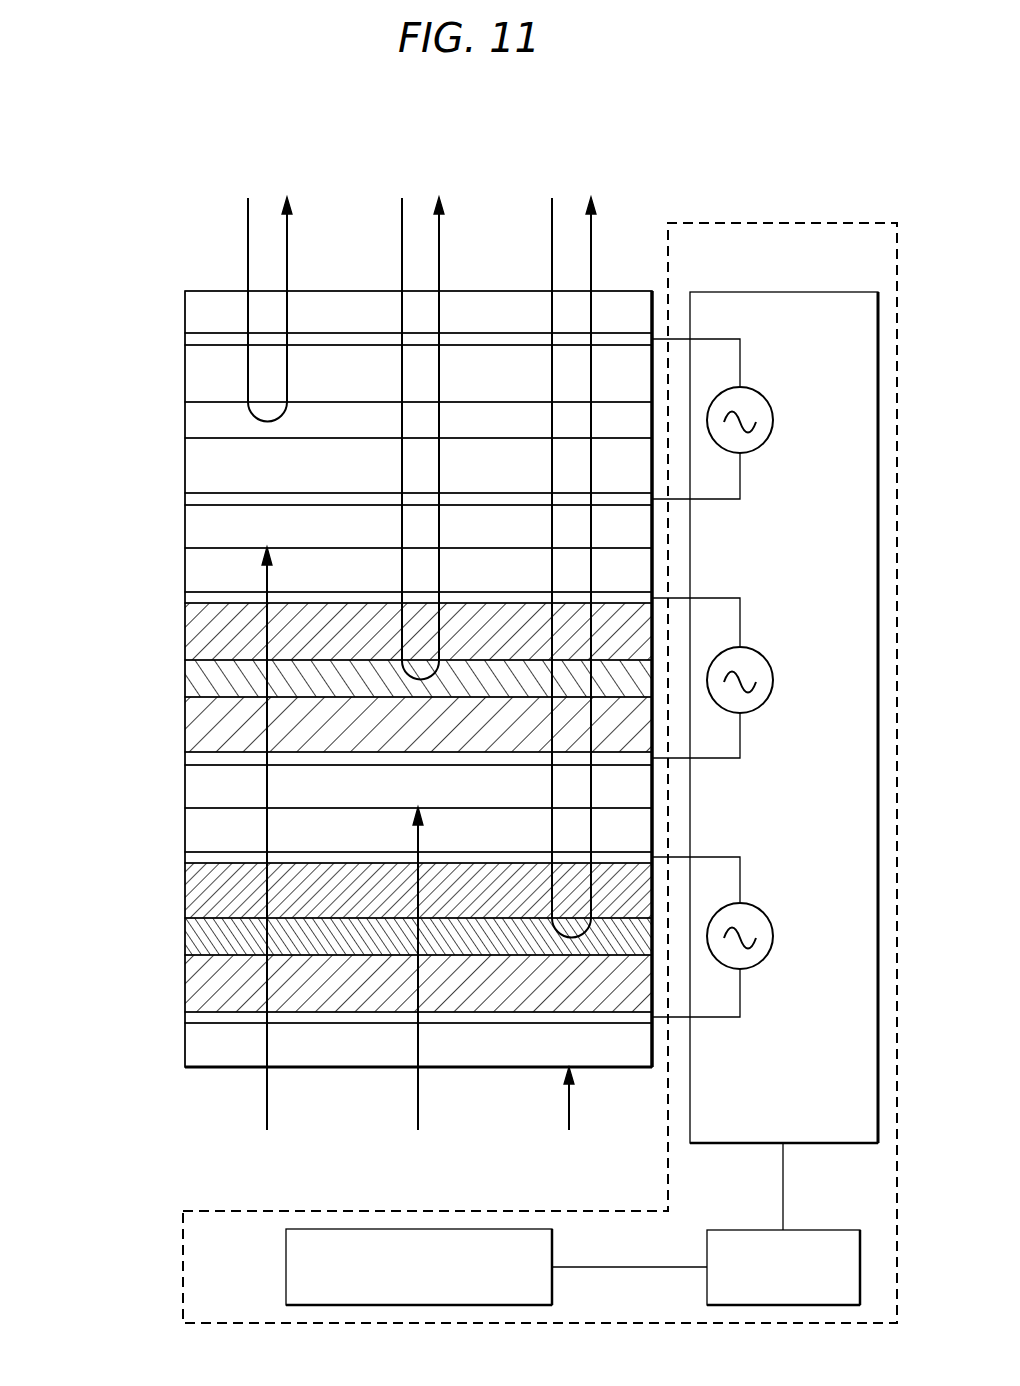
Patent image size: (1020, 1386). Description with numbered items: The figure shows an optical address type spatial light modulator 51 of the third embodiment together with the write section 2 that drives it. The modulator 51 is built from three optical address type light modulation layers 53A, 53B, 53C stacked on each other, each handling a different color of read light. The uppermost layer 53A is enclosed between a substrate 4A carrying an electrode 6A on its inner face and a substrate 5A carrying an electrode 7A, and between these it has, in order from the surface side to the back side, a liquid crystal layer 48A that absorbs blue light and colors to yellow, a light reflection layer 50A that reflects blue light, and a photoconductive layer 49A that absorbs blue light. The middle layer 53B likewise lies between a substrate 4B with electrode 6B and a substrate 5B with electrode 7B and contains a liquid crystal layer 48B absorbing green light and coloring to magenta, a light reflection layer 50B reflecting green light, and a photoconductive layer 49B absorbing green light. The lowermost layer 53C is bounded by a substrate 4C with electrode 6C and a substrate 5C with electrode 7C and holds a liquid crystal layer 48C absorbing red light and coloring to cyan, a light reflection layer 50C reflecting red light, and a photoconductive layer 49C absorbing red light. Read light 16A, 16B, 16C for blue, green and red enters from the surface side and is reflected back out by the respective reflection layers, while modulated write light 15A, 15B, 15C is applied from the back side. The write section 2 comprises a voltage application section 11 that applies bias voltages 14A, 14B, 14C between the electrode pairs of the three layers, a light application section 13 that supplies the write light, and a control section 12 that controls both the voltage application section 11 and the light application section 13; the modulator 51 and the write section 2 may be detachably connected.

The write section 2 is at (792, 214).
The voltage application section 11 is at (786, 292).
The control section 12 is at (821, 1230).
The light application section 13 is at (286, 1267).
The bias voltage 14A is at (776, 420).
The bias voltage 14B is at (776, 680).
The bias voltage 14C is at (776, 936).
The write light 15A is at (266, 872).
The write light 15B is at (417, 1002).
The write light 15C is at (568, 1132).
The read light 16A is at (269, 275).
The read light 16B is at (421, 404).
The read light 16C is at (572, 533).
The optical address type spatial light modulator 51 is at (190, 276).
The optical address type light modulation layer 53A is at (97, 300).
The optical address type light modulation layer 53B is at (97, 558).
The optical address type light modulation layer 53C is at (97, 817).
The substrate 4A is at (185, 315).
The electrode 6A is at (185, 343).
The liquid crystal layer 48A is at (185, 378).
The light reflection layer 50A is at (185, 423).
The photoconductive layer 49A is at (185, 468).
The electrode 7A is at (185, 502).
The substrate 5A is at (185, 530).
The substrate 4B is at (185, 575).
The electrode 6B is at (185, 603).
The liquid crystal layer 48B is at (185, 635).
The light reflection layer 50B is at (185, 680).
The photoconductive layer 49B is at (185, 724).
The electrode 7B is at (185, 760).
The substrate 5B is at (185, 788).
The substrate 4C is at (185, 833).
The electrode 6C is at (185, 860).
The liquid crystal layer 48C is at (185, 893).
The light reflection layer 50C is at (185, 940).
The photoconductive layer 49C is at (185, 985).
The electrode 7C is at (185, 1020).
The substrate 5C is at (185, 1048).